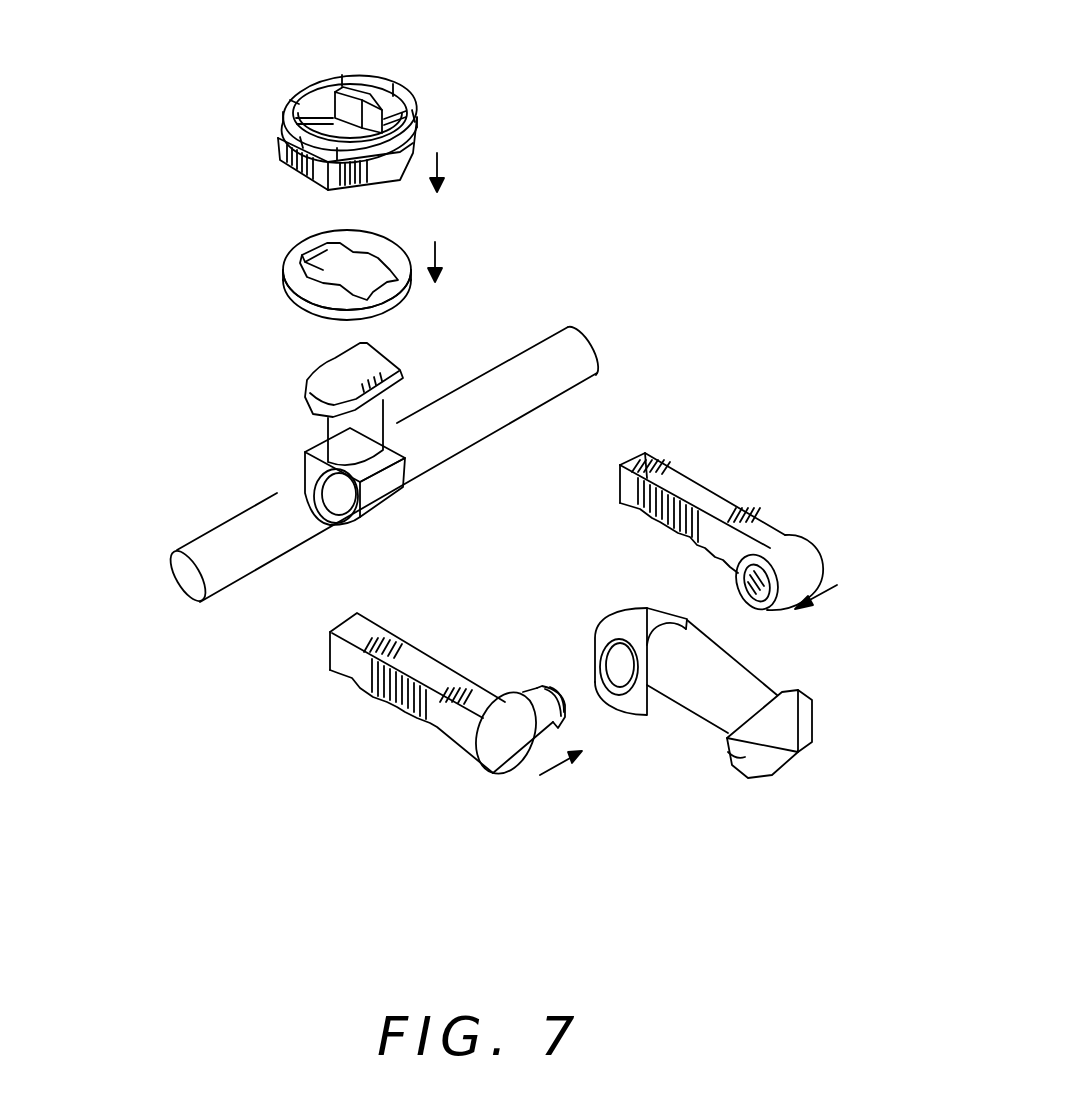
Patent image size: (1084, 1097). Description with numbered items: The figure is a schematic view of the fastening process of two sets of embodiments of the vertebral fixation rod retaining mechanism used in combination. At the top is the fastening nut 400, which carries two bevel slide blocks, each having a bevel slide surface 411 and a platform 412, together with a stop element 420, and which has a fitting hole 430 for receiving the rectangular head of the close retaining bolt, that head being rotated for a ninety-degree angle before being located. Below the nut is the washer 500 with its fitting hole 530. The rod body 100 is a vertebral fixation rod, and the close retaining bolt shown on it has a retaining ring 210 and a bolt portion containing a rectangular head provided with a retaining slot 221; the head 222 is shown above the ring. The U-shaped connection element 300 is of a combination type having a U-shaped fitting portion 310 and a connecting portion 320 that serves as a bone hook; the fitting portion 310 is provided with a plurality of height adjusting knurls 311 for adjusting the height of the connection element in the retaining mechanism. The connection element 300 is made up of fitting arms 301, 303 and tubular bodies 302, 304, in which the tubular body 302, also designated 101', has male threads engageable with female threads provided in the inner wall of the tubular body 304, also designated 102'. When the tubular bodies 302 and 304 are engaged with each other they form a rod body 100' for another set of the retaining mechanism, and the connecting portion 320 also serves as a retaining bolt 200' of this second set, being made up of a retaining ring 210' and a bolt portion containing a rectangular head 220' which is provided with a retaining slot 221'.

The fastening nut 400 is at (438, 104).
The stop element 420 is at (347, 75).
The platform 412 is at (360, 98).
The bevel slide surface 411 is at (377, 113).
The fitting hole 430 is at (337, 137).
The washer 500 is at (273, 280).
The fitting hole 530 is at (345, 278).
The rod body 100 is at (386, 418).
The bolt head 222 is at (320, 378).
The retaining slot 221 is at (250, 432).
The retaining ring 210 is at (261, 476).
The rod body 100' is at (526, 570).
The fitting arm 303 is at (715, 537).
The height adjusting knurls 311 is at (640, 518).
The tubular body 304 is at (755, 585).
The tubular body 102' is at (847, 621).
The tubular body 101' is at (742, 660).
The U-shaped connection element 300 is at (495, 734).
The U-shaped fitting portion 310 is at (336, 697).
The fitting arm 301 is at (347, 670).
The tubular body 302 is at (550, 718).
The connecting portion 320 is at (522, 754).
The retaining ring 210' is at (746, 661).
The rectangular head 220' is at (771, 676).
The retaining slot 221' is at (809, 734).
The retaining bolt 200' is at (889, 788).